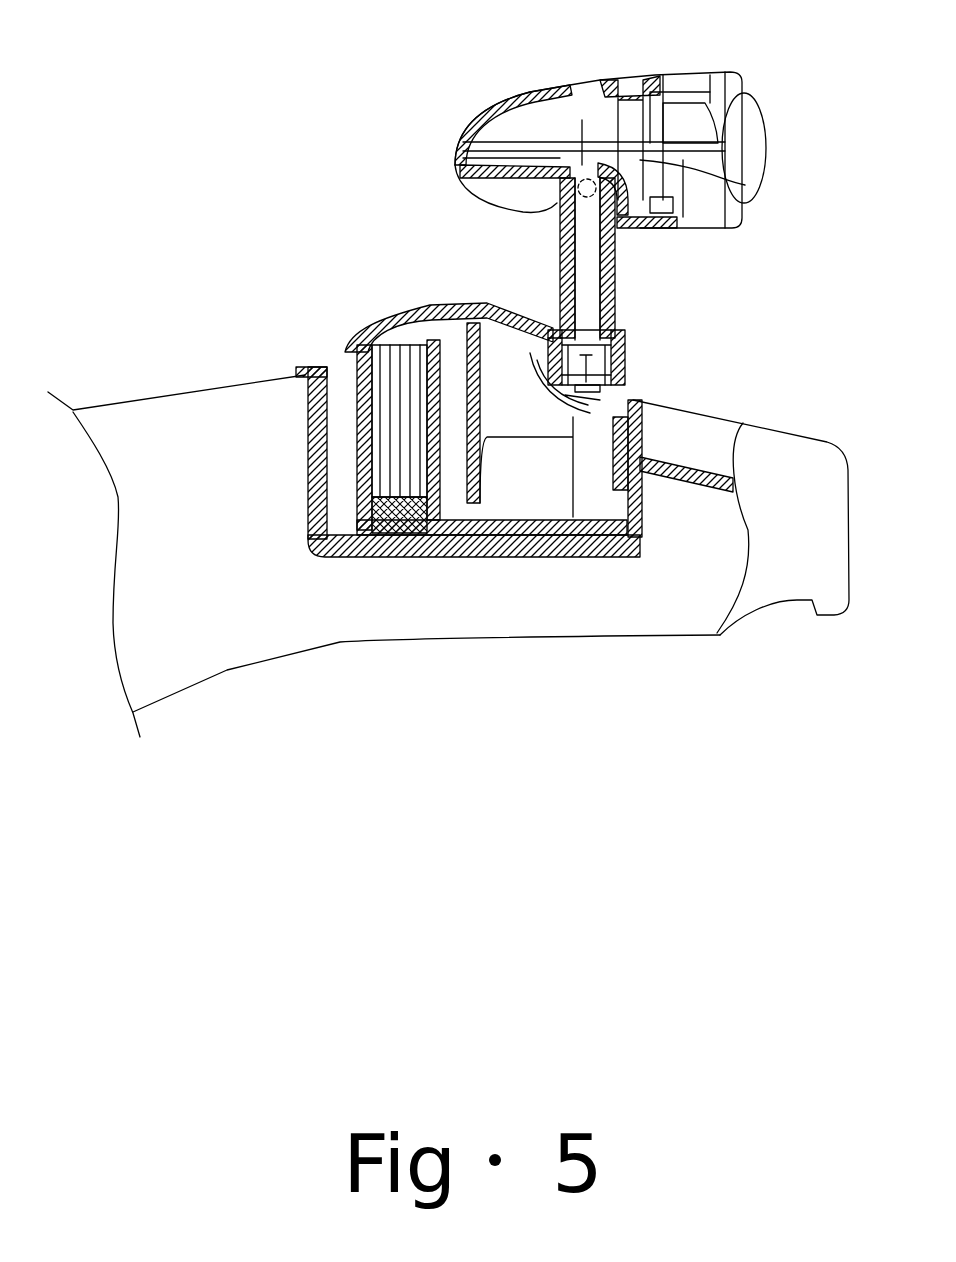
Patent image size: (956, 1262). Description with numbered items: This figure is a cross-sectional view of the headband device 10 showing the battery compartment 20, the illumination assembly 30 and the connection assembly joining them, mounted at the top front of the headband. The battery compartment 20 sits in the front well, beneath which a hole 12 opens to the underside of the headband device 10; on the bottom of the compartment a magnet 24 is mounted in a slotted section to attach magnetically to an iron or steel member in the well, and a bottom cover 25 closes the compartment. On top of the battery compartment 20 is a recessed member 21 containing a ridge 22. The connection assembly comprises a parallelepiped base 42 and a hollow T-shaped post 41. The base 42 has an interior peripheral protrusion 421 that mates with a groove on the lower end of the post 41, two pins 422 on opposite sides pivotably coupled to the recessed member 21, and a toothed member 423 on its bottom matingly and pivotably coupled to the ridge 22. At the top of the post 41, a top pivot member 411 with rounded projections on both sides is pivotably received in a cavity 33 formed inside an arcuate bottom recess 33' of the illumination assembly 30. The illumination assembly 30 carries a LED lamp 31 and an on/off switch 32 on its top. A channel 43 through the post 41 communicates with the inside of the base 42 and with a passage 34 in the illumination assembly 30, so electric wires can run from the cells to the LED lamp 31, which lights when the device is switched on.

The headband device 10 is at (222, 634).
The hole 12 is at (485, 548).
The battery compartment 20 is at (420, 310).
The top recessed member 21 is at (625, 367).
The ridge 22 is at (560, 413).
The magnet 24 is at (408, 555).
The bottom cover 25 is at (568, 552).
The illumination assembly 30 is at (740, 100).
The LED lamp 31 is at (710, 118).
The on/off switch 32 is at (620, 75).
The cavity 33 is at (578, 97).
The arcuate bottom recess 33' is at (755, 184).
The passage 34 is at (630, 120).
The hollow T-shaped post 41 is at (612, 238).
The top pivot member 411 is at (550, 213).
The base 42 is at (548, 320).
The interior peripheral protrusion 421 is at (615, 345).
The pins 422 is at (620, 328).
The toothed member 423 is at (615, 387).
The channel 43 is at (590, 275).